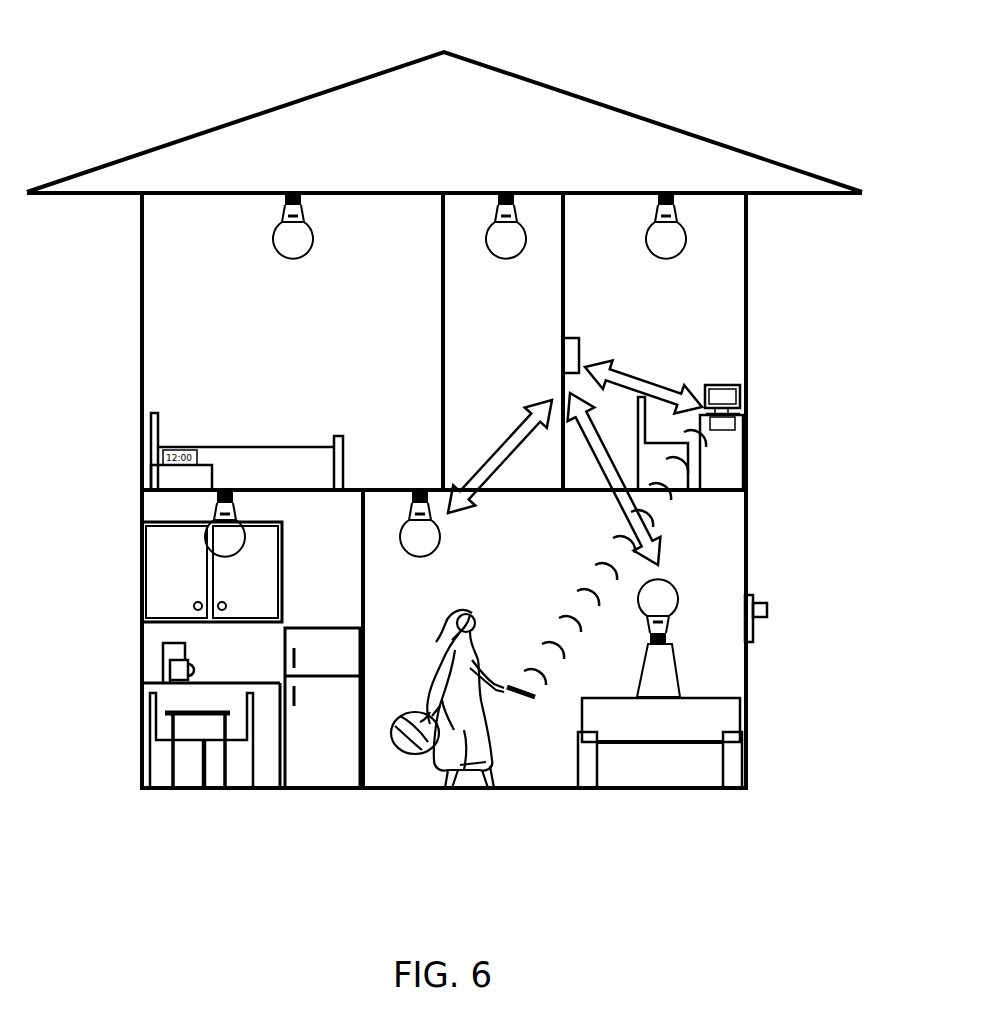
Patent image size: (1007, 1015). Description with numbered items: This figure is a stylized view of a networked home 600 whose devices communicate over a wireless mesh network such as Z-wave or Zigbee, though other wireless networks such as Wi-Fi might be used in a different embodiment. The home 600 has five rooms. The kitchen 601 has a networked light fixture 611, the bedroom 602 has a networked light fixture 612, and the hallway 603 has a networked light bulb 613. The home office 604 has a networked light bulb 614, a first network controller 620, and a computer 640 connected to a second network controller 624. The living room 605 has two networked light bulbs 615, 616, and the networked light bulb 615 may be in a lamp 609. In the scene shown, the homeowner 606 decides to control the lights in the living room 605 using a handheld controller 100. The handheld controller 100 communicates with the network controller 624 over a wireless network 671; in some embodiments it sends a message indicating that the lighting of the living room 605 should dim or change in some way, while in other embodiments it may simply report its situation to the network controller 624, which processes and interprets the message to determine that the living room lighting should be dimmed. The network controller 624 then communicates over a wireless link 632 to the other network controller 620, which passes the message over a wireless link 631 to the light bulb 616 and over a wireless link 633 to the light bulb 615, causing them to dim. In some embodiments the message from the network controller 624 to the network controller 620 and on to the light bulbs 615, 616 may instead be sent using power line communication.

The handheld controller 100 is at (527, 698).
The networked home 600 is at (150, 152).
The kitchen 601 is at (348, 544).
The bedroom 602 is at (323, 334).
The hallway 603 is at (528, 334).
The home office 604 is at (703, 334).
The living room 605 is at (553, 544).
The homeowner 606 is at (463, 730).
The lamp 609 is at (678, 668).
The networked light fixture 611 is at (217, 507).
The networked light fixture 612 is at (277, 230).
The networked light bulb 613 is at (492, 215).
The networked light bulb 614 is at (687, 235).
The networked light bulb 615 is at (677, 597).
The networked light bulb 616 is at (418, 565).
The first network controller 620 is at (570, 338).
The second network controller 624 is at (735, 430).
The wireless link 631 is at (491, 443).
The wireless link 632 is at (650, 377).
The wireless link 633 is at (663, 557).
The computer 640 is at (740, 399).
The wireless network 671 is at (597, 643).